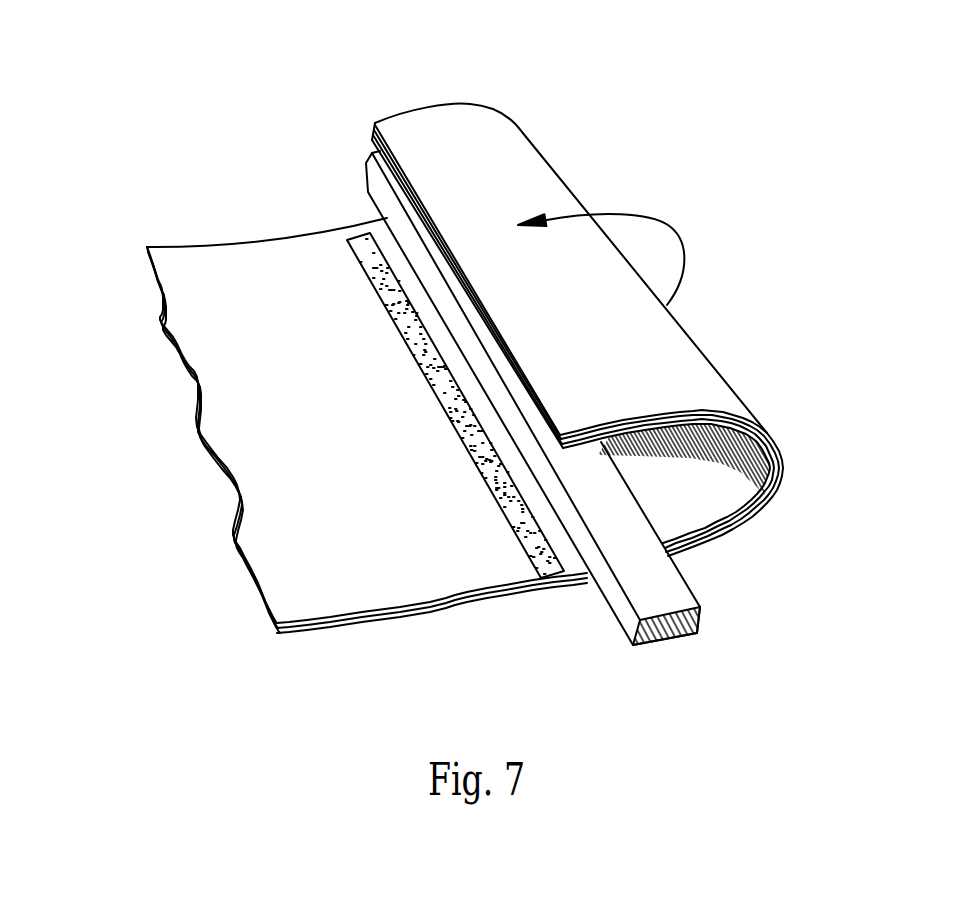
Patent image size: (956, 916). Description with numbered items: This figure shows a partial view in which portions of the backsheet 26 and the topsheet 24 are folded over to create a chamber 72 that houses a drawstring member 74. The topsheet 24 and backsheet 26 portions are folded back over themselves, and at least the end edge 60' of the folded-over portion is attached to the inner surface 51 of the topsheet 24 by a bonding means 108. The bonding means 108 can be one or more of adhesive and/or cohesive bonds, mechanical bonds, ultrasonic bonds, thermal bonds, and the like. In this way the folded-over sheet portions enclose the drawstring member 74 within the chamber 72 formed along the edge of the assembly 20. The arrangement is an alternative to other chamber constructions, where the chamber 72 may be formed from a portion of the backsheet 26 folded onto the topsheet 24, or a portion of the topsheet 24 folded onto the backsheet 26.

The laminate structure 20 is at (168, 212).
The topsheet 24 is at (300, 574).
The backsheet 26 is at (687, 367).
The inner surface 51 is at (198, 292).
The end edge 60' is at (448, 278).
The chamber 72 is at (421, 101).
The drawstring member 74 is at (668, 590).
The bonding means 108 is at (545, 553).